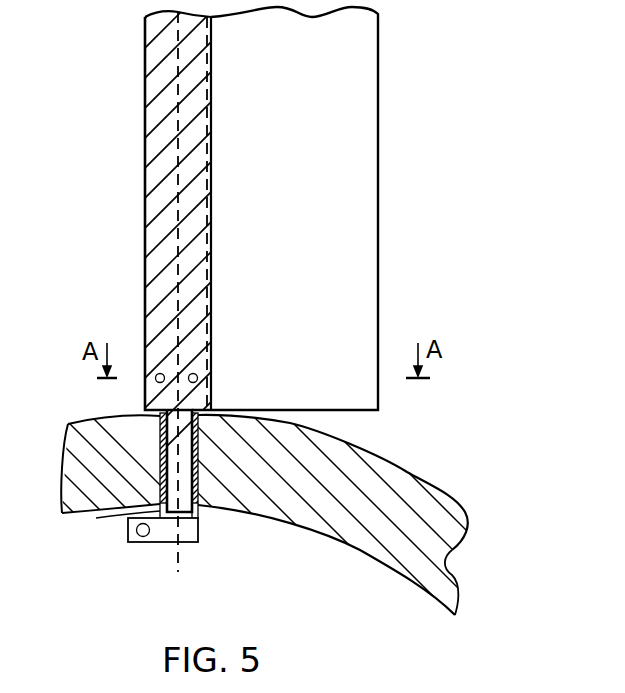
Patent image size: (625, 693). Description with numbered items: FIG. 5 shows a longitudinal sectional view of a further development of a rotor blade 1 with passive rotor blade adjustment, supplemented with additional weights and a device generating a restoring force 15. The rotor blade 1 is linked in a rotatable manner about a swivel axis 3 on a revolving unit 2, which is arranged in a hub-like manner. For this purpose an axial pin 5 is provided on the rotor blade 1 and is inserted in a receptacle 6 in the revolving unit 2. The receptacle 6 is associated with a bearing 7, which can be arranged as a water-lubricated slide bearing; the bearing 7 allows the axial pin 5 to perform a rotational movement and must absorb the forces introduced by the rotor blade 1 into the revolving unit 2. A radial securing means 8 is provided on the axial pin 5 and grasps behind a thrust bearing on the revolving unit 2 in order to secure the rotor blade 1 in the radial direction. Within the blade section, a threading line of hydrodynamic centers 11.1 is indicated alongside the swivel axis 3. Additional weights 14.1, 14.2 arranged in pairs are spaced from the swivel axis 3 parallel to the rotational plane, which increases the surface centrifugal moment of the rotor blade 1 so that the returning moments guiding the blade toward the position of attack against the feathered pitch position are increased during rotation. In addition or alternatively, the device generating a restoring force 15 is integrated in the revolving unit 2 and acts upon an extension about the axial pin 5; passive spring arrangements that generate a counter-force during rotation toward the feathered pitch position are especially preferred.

The rotor blade 1 is at (145, 248).
The swivel axis 3 is at (162, 167).
The threading line of hydrodynamic centers 11.1 is at (208, 217).
The additional weight 14.1 is at (198, 377).
The additional weight 14.2 is at (155, 380).
The revolving unit 2 is at (80, 447).
The bearing 7 is at (161, 486).
The radial securing means 8 is at (118, 514).
The receptacle 6 is at (198, 490).
The axial pin 5 is at (199, 464).
The device generating restoring force 15 is at (148, 542).